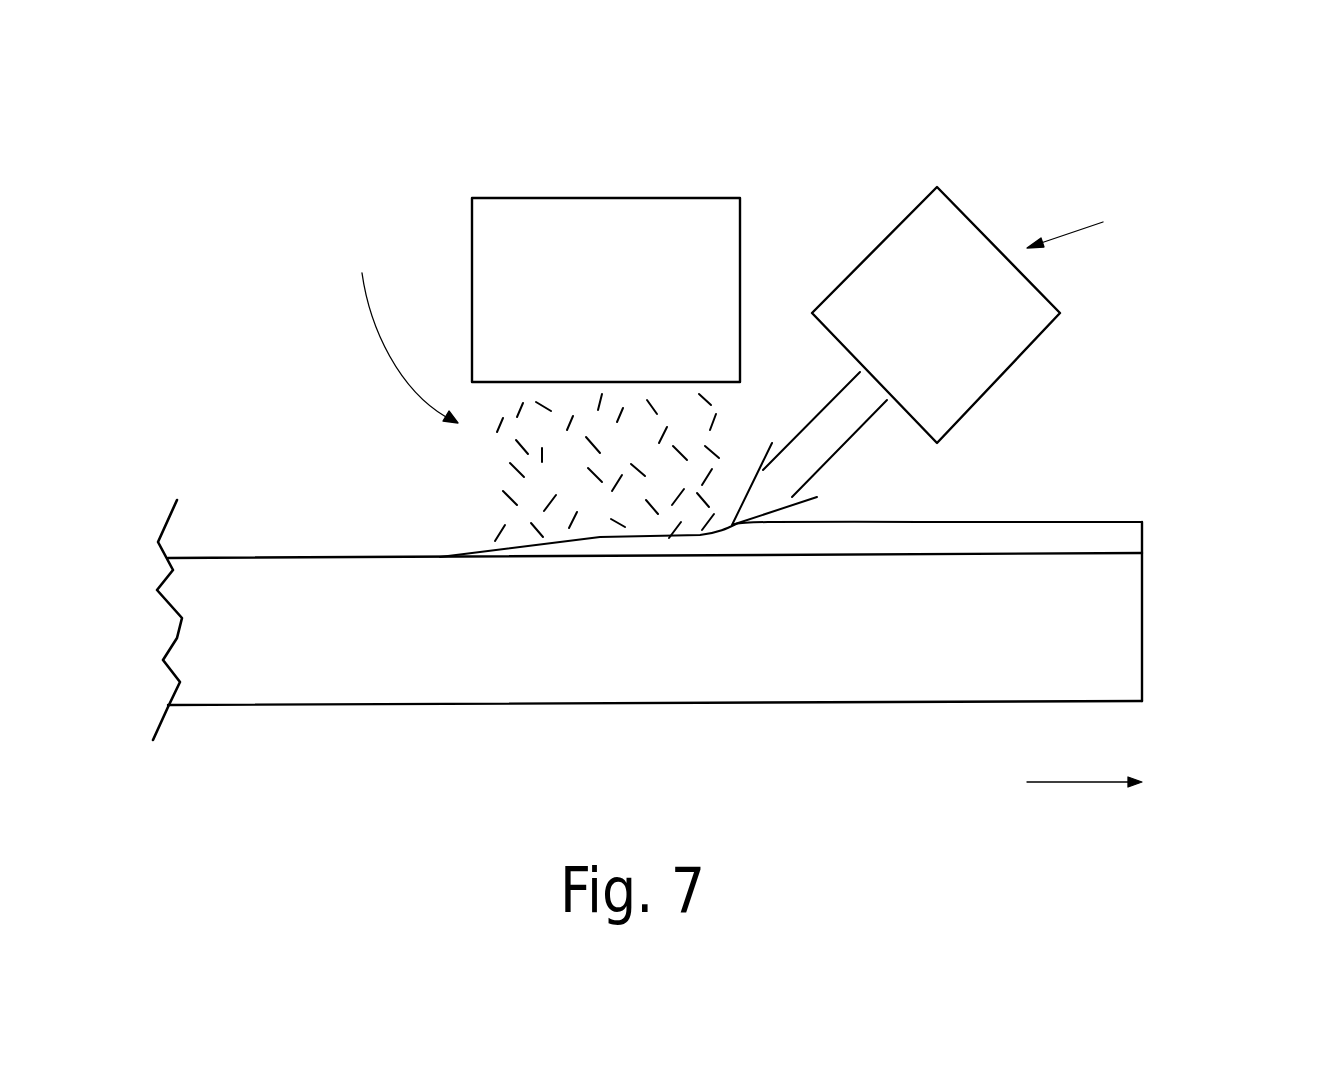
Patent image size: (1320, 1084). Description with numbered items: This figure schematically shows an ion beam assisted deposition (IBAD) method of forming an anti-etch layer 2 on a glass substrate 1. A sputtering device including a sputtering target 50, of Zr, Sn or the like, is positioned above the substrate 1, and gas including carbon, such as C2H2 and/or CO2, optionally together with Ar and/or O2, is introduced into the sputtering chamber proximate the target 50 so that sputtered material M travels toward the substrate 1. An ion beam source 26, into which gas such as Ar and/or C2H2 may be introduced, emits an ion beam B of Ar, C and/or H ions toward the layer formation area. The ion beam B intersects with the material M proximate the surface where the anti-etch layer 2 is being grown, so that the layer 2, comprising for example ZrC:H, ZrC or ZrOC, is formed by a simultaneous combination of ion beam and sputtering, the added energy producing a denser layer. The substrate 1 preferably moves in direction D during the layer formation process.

The substrate 1 is at (1120, 617).
The anti-etch layer 2 is at (1002, 533).
The ion beam source 26 is at (940, 216).
The sputtering target 50 is at (560, 215).
The ion beam B is at (826, 403).
The sputtered material M is at (483, 485).
The direction of substrate movement D is at (1067, 785).